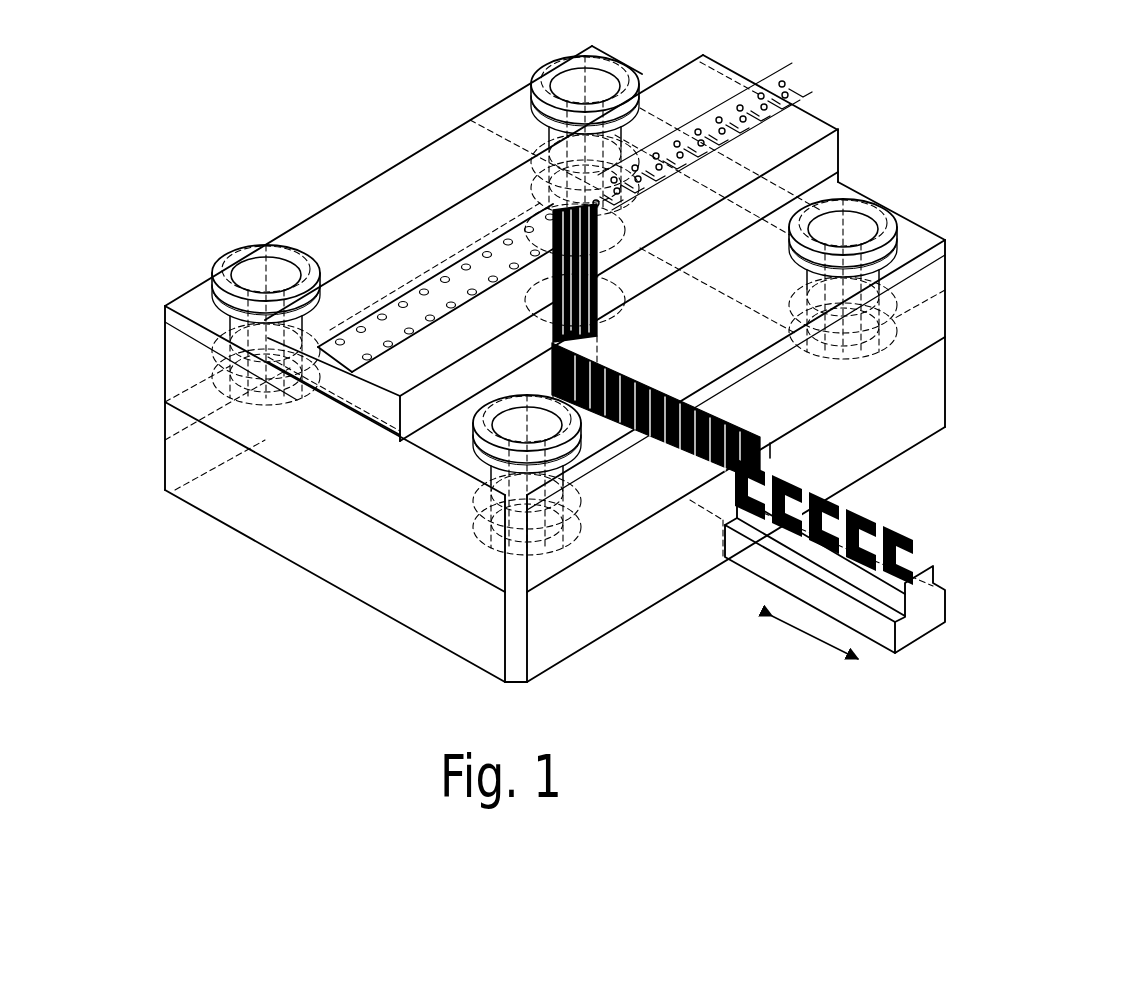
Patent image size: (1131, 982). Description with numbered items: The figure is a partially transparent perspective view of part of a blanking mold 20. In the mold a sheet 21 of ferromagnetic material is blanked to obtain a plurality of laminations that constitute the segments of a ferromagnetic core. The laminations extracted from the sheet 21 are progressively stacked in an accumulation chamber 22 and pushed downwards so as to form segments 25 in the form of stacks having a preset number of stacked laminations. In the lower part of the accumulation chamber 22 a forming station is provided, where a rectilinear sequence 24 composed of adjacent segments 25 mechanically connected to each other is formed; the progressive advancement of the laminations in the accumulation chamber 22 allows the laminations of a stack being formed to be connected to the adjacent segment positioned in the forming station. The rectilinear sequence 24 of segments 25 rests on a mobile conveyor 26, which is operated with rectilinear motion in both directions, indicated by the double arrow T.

The blanking mold 20 is at (865, 162).
The sheet 21 is at (448, 288).
The accumulation chamber 22 is at (642, 343).
The rectilinear sequence 24 is at (936, 551).
The segments 25 is at (835, 522).
The mobile conveyor 26 is at (923, 623).
The double arrow T is at (807, 633).